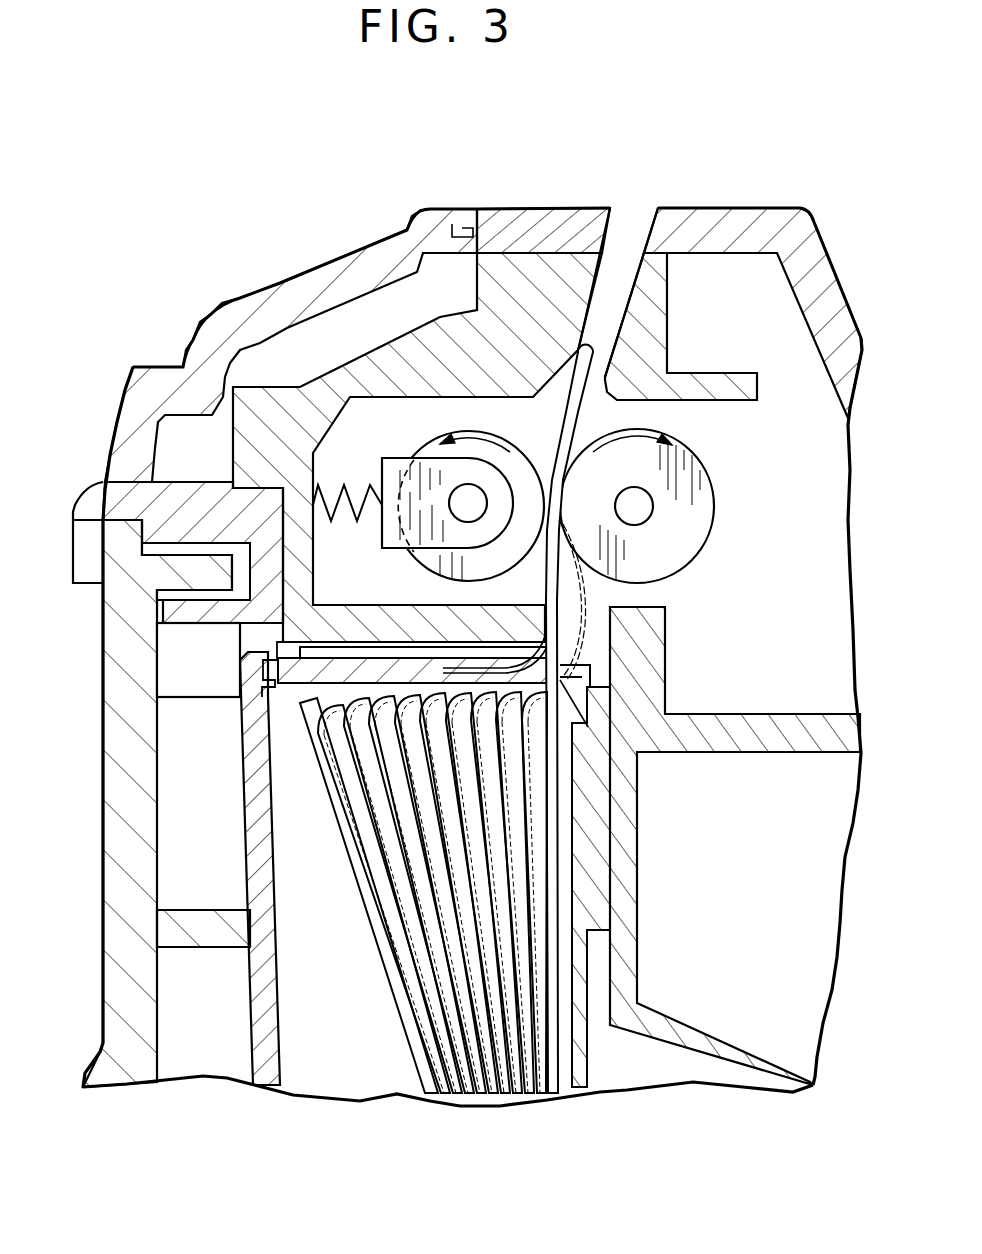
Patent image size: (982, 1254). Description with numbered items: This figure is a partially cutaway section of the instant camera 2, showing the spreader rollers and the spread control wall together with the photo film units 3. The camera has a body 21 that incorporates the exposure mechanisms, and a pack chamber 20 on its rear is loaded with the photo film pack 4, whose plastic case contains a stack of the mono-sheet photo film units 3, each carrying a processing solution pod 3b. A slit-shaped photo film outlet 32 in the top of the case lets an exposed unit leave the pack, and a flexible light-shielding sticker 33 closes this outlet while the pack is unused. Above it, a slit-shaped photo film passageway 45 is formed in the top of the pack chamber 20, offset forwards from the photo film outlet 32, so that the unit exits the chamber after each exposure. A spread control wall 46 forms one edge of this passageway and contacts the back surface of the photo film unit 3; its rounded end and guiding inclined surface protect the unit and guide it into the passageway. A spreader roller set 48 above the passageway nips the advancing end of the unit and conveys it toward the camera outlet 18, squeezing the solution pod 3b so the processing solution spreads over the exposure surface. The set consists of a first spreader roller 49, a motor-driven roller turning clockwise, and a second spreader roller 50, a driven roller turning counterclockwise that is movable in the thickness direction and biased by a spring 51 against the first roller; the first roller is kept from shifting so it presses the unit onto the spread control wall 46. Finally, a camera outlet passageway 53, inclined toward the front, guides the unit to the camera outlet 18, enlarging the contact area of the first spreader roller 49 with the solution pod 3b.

The instant camera 2 is at (547, 168).
The photo film units 3 is at (618, 416).
The processing solution pod 3b is at (575, 590).
The photo film pack 4 is at (232, 985).
The camera outlet 18 is at (657, 232).
The pack chamber 20 is at (248, 640).
The body 21 is at (327, 348).
The photo film outlet 32 is at (555, 690).
The light-shielding sticker 33 is at (527, 652).
The photo film passageway 45 is at (608, 637).
The spread control wall 46 is at (547, 597).
The spreader roller set 48 is at (755, 493).
The first spreader roller 49 is at (697, 524).
The second spreader roller 50 is at (433, 448).
The spring 51 is at (343, 523).
The camera outlet passageway 53 is at (590, 310).